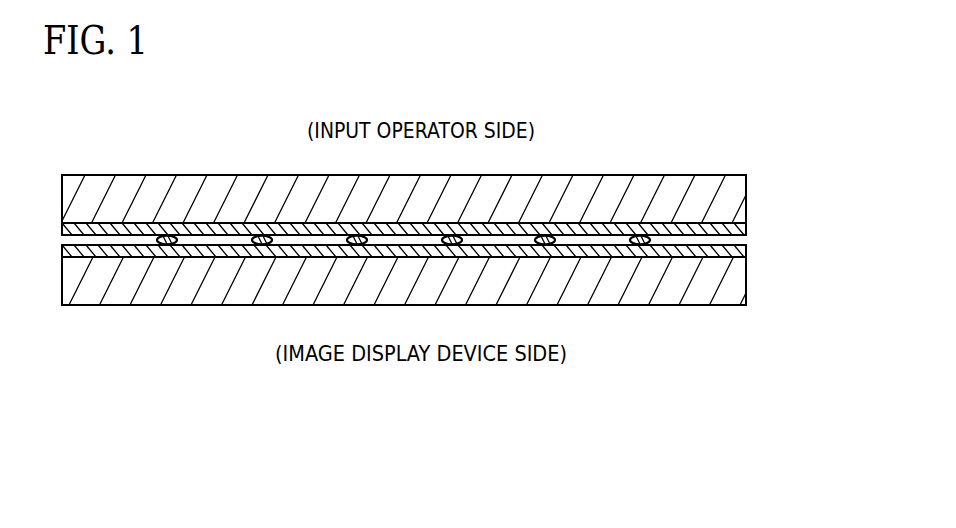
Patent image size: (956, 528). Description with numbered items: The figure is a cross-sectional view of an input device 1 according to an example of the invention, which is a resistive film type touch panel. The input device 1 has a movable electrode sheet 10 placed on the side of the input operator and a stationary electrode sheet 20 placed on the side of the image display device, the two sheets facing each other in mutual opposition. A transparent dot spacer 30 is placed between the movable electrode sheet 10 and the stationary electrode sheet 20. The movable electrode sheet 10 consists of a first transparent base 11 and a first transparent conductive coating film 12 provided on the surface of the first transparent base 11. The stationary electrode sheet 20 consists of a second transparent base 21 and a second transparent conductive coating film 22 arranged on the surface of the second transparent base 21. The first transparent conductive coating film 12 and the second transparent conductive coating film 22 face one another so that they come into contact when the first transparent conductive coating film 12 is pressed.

The input device 1 is at (443, 212).
The movable electrode sheet 10 is at (443, 159).
The first transparent base 11 is at (732, 200).
The first transparent conductive coating film 12 is at (732, 227).
The stationary electrode sheet 20 is at (443, 320).
The second transparent base 21 is at (732, 277).
The second transparent conductive coating film 22 is at (732, 251).
The transparent dot spacer 30 is at (167, 236).